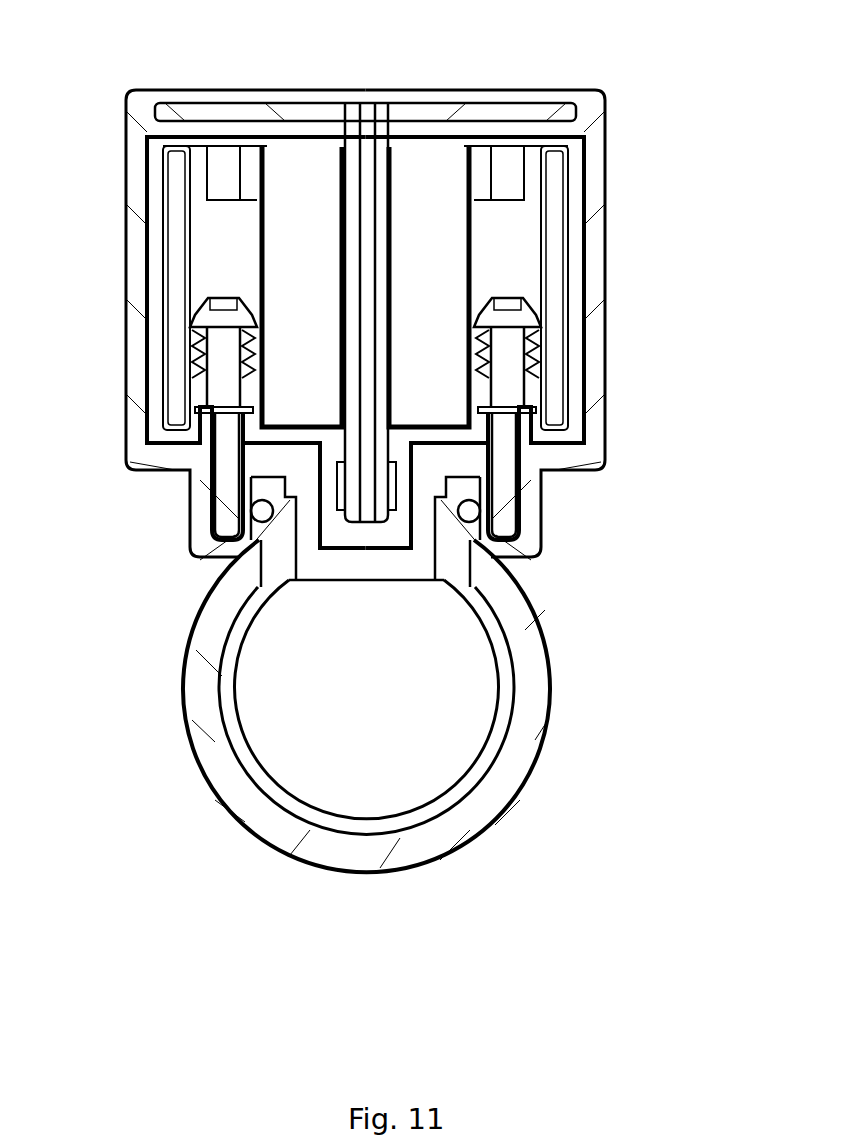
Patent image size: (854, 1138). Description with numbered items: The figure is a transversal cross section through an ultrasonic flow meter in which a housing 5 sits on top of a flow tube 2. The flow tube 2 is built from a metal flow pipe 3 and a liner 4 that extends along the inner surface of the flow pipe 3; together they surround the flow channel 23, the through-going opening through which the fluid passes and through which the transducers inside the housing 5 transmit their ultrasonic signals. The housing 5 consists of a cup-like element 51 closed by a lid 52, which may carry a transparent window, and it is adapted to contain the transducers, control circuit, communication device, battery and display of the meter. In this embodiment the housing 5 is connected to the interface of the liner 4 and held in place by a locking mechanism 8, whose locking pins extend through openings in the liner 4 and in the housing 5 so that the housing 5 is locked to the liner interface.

The flow tube 2 is at (573, 683).
The flow pipe 3 is at (202, 702).
The liner 4 is at (247, 760).
The housing 5 is at (522, 218).
The locking mechanism 8 is at (240, 503).
The flow channel 23 is at (393, 715).
The cup-like element 51 is at (593, 326).
The lid 52 is at (452, 107).